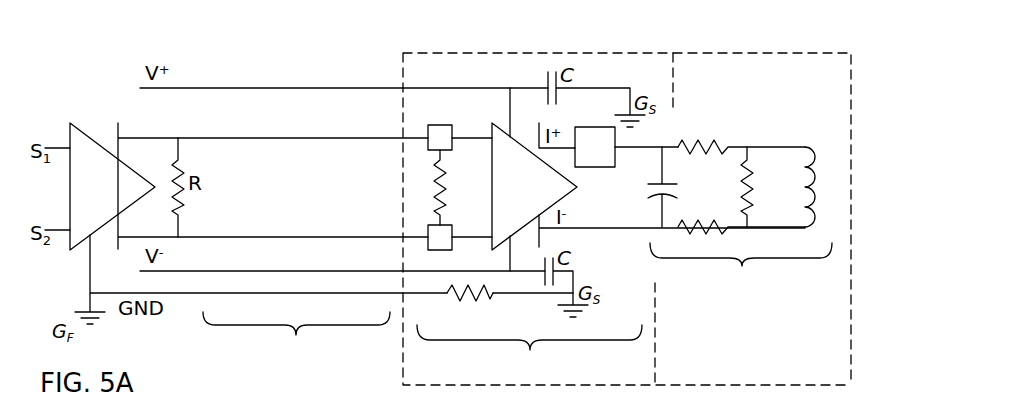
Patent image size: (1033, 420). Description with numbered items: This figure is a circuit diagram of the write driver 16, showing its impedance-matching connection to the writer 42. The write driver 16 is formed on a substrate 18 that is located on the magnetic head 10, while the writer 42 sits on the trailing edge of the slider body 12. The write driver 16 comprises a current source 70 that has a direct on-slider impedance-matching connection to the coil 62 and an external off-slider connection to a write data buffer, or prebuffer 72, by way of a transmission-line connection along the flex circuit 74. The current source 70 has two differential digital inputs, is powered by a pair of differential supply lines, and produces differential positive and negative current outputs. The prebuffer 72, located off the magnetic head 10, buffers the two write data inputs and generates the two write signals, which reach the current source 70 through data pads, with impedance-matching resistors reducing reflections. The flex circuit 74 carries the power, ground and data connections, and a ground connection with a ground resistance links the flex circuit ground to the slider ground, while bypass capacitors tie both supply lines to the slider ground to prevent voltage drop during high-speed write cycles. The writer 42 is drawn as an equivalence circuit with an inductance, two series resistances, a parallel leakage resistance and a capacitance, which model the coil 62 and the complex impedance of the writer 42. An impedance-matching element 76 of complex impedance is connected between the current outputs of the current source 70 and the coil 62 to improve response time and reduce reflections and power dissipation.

The magnetic head 10 is at (753, 197).
The slider body 12 is at (813, 34).
The write driver 16 is at (527, 250).
The substrate 18 is at (627, 219).
The writer 42 is at (726, 205).
The coil 62 is at (808, 152).
The current source 70 is at (534, 186).
The write data buffer (prebuffer) 72 is at (112, 186).
The flex circuit 74 is at (296, 338).
The impedance-matching element 76 is at (593, 167).